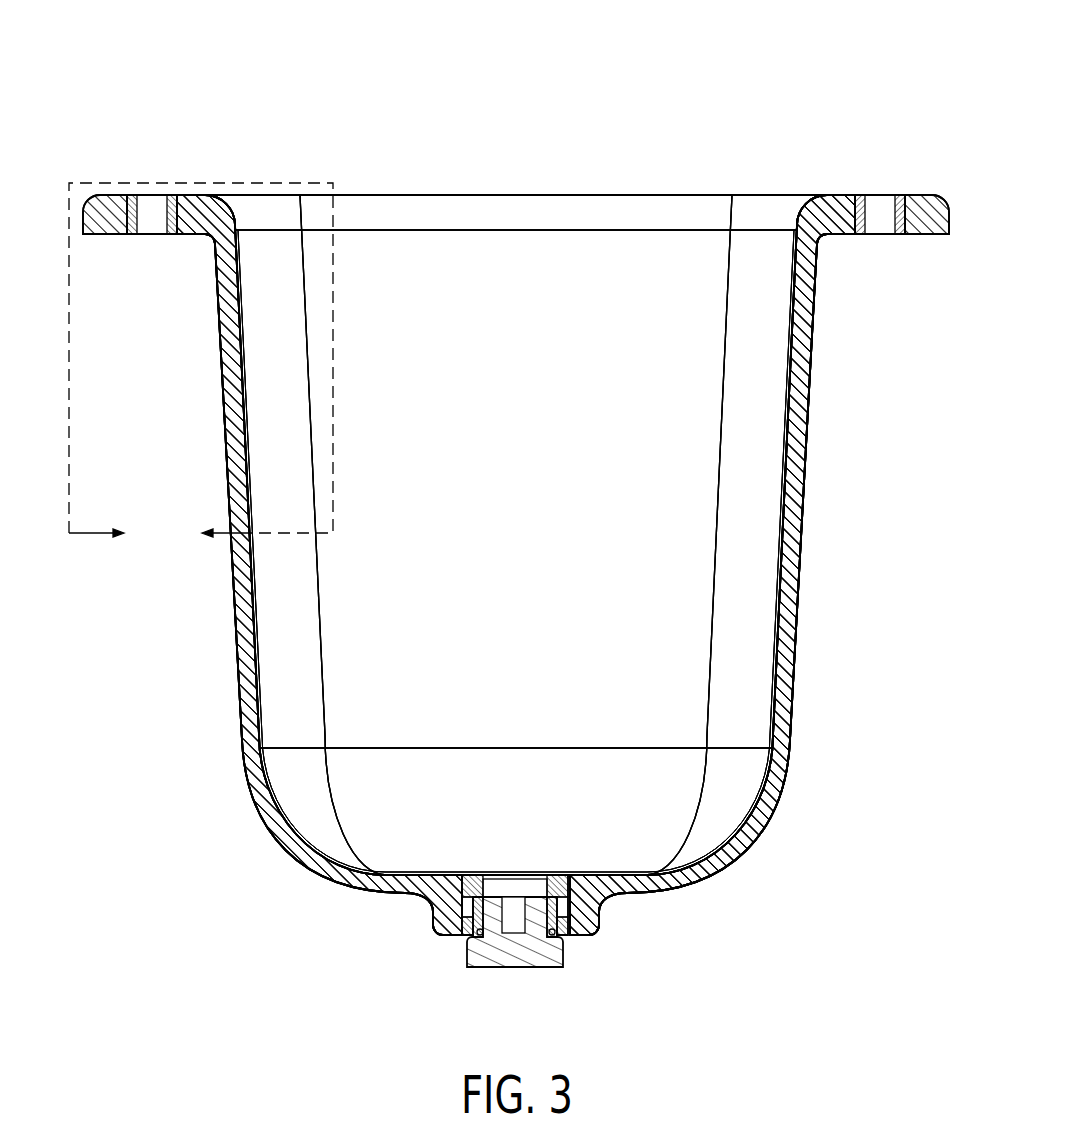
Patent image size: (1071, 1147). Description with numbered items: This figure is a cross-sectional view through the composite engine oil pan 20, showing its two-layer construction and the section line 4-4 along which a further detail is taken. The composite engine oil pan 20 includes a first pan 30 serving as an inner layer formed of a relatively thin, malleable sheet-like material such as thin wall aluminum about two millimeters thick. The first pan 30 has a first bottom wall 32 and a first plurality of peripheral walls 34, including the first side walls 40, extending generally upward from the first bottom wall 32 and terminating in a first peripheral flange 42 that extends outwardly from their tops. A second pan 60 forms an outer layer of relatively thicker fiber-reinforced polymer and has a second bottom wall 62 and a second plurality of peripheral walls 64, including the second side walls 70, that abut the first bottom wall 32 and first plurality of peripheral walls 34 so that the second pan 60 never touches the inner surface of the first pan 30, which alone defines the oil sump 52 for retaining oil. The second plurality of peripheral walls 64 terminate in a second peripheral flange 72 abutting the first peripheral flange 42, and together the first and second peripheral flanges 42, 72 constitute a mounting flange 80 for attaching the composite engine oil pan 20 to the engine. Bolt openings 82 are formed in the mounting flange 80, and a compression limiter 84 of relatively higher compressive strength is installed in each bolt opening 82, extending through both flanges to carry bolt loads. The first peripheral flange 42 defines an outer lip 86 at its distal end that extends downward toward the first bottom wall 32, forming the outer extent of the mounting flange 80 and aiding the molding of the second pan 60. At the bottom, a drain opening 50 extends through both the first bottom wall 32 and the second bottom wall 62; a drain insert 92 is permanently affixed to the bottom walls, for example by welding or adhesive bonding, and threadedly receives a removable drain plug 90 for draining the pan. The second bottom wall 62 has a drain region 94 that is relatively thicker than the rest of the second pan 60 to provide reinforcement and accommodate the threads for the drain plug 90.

The composite engine oil pan 20 is at (836, 118).
The first pan 30 is at (744, 826).
The first bottom wall 32 is at (594, 873).
The first plurality of peripheral walls 34 is at (778, 512).
The first side walls 40 is at (258, 640).
The first peripheral flange 42 is at (108, 195).
The drain opening 50 is at (460, 942).
The oil sump 52 is at (645, 316).
The second pan 60 is at (766, 835).
The second bottom wall 62 is at (636, 895).
The second plurality of peripheral walls 64 is at (806, 480).
The second side walls 70 is at (237, 633).
The second peripheral flange 72 is at (194, 234).
The mounting flange 80 is at (184, 190).
The bolt openings 82 is at (130, 234).
The compression limiter 84 is at (168, 218).
The outer lip 86 is at (83, 222).
The drain plug 90 is at (540, 967).
The drain insert 92 is at (492, 878).
The drain region 94 is at (430, 917).
The section line 4- 4 is at (201, 377).